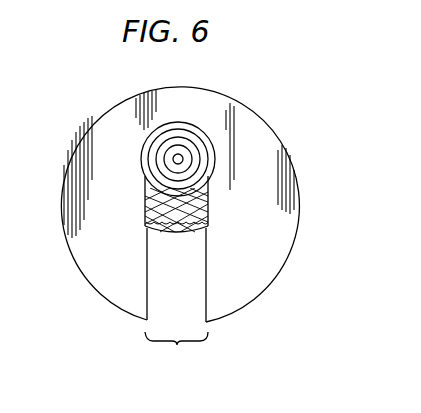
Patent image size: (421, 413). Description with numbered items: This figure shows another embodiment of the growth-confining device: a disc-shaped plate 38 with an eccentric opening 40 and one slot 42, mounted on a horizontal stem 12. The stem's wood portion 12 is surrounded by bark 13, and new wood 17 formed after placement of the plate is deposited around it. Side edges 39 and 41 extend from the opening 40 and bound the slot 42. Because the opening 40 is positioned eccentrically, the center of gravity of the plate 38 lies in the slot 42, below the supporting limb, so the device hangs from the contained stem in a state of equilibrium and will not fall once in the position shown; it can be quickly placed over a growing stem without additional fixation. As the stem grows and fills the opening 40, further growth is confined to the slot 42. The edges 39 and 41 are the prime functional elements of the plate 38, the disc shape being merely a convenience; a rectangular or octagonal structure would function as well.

The wood portion 12 is at (186, 132).
The bark 13 is at (160, 233).
The new wood 17 is at (228, 97).
The disc-shaped plate 38 is at (272, 246).
The side edge 39 is at (200, 262).
The eccentric opening 40 is at (143, 146).
The side edge 41 is at (147, 280).
The slot 42 is at (176, 359).